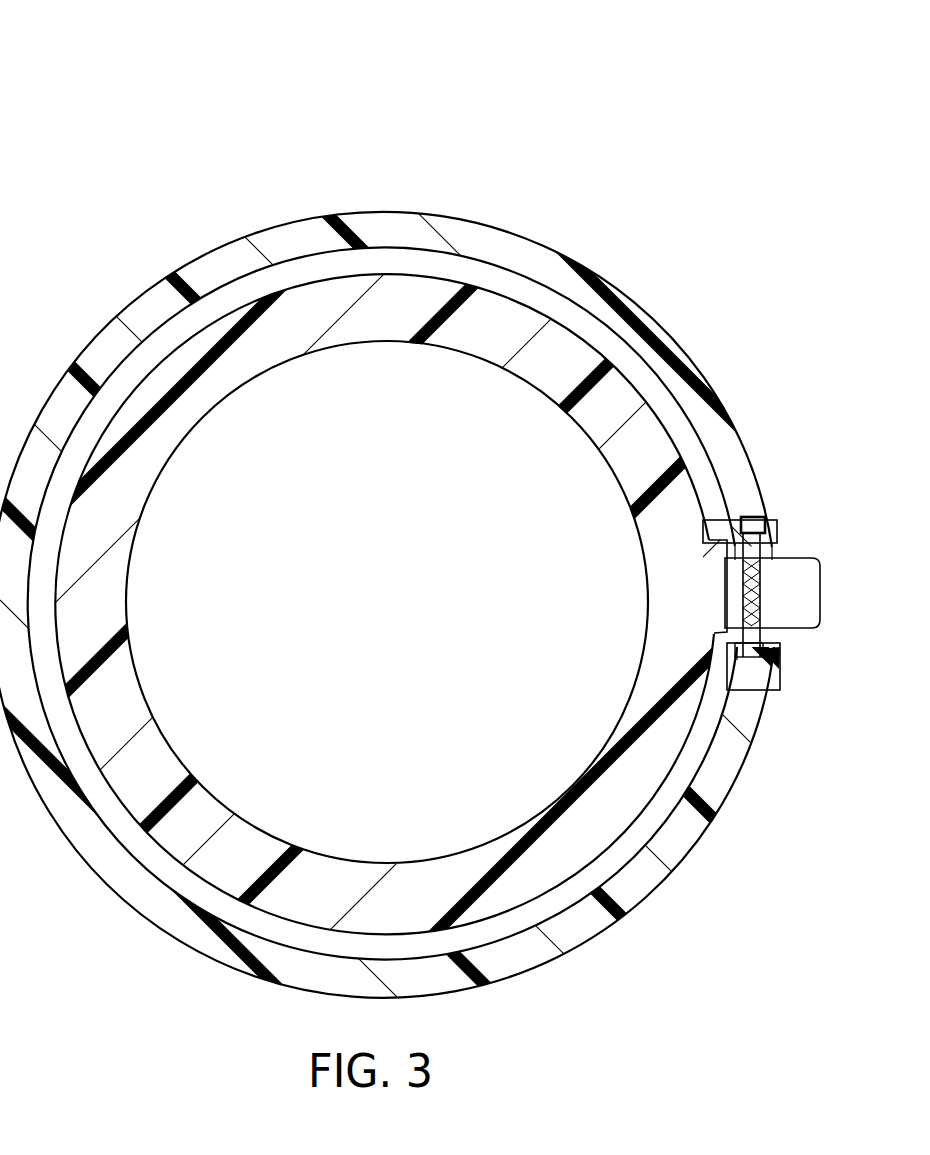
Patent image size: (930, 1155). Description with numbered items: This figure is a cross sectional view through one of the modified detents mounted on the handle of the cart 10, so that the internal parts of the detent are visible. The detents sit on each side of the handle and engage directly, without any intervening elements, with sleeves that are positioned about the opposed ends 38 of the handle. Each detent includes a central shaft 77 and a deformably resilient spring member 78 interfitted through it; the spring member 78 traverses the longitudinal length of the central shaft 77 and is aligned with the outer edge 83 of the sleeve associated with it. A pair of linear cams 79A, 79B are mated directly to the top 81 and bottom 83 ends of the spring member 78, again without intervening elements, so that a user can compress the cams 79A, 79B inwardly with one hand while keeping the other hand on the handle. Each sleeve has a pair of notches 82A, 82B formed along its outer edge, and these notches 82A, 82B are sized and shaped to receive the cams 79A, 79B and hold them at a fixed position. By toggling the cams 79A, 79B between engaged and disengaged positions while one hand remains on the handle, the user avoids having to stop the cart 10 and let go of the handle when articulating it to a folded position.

The cart 10 is at (73, 90).
The opposed ends of the handle 38 is at (728, 642).
The central shaft 77 is at (762, 662).
The spring member 78 is at (785, 630).
The first linear cam 79A is at (746, 520).
The second linear cam 79B is at (790, 660).
The top end of the spring member 81 is at (778, 555).
The first notch 82A is at (729, 546).
The second notch 82B is at (742, 678).
The bottom end of the spring member 83 is at (752, 517).